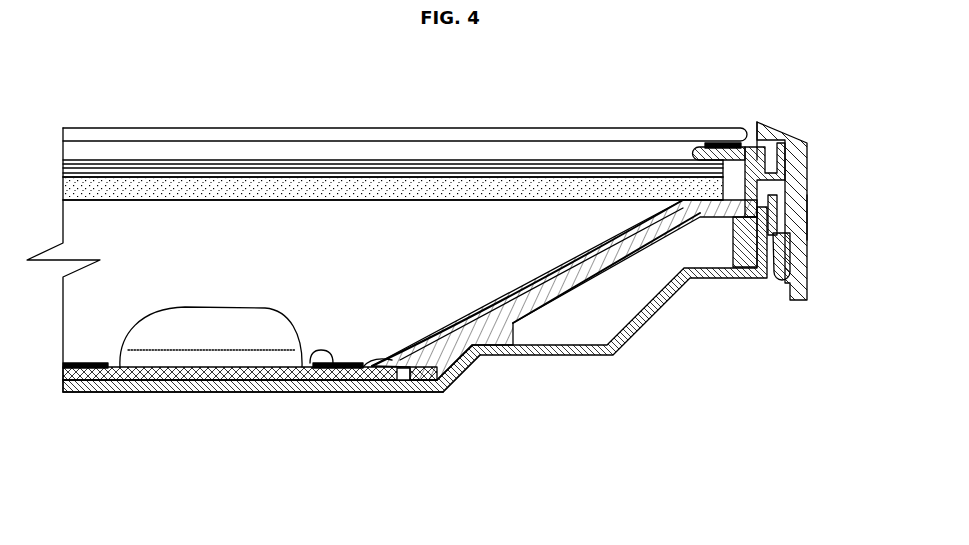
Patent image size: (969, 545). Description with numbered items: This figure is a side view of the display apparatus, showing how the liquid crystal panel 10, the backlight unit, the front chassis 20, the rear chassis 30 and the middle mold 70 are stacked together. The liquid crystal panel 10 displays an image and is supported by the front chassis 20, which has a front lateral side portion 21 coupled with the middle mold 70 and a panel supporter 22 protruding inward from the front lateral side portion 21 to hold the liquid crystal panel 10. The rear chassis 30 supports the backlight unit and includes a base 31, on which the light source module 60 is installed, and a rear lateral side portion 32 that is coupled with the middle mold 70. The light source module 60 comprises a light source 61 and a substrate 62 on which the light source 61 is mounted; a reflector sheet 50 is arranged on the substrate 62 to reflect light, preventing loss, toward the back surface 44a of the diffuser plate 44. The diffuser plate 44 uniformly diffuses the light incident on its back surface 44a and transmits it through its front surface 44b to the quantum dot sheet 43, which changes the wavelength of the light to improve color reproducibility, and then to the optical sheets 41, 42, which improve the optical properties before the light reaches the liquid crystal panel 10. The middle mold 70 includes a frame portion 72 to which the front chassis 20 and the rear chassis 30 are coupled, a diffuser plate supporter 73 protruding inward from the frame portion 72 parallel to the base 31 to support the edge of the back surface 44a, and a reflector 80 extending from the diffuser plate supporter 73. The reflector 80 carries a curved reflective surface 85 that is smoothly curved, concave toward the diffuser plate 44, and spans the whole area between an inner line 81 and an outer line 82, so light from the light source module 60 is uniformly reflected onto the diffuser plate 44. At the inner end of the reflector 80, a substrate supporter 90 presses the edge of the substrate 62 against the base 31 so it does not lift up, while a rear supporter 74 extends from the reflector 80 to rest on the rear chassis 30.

The liquid crystal panel 10 is at (318, 133).
The front chassis 20 is at (813, 197).
The front lateral side portion 21 is at (808, 218).
The panel supporter 22 is at (730, 147).
The rear chassis 30 is at (415, 339).
The base 31 is at (358, 392).
The rear lateral side portion 32 is at (782, 283).
The optical sheet 41 is at (415, 160).
The optical sheet 42 is at (466, 165).
The quantum dot sheet 43 is at (527, 172).
The diffuser plate 44 is at (247, 188).
The back surface 44a is at (143, 200).
The front surface 44b is at (150, 175).
The reflector sheet 50 is at (318, 365).
The light source module 60 is at (250, 401).
The light source 61 is at (190, 325).
The substrate 62 is at (253, 376).
The middle mold 70 is at (766, 183).
The frame portion 72 is at (790, 240).
The diffuser plate supporter 73 is at (718, 222).
The rear supporter 74 is at (479, 388).
The reflector 80 is at (564, 300).
The inner line 81 is at (373, 362).
The outer line 82 is at (690, 158).
The curved reflective surface 85 is at (560, 288).
The substrate supporter 90 is at (391, 362).